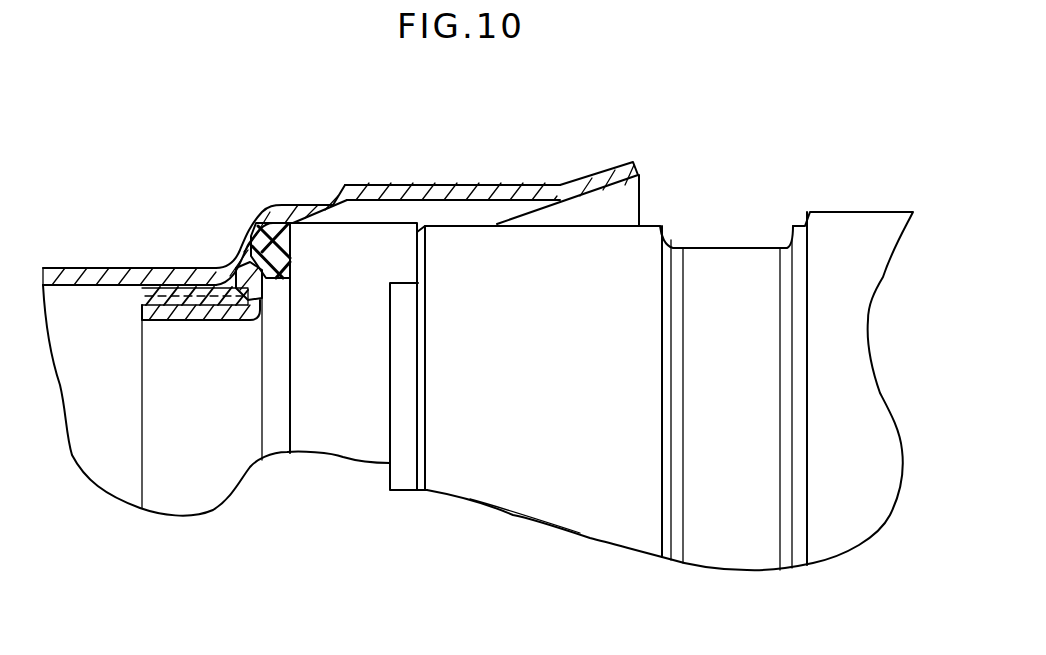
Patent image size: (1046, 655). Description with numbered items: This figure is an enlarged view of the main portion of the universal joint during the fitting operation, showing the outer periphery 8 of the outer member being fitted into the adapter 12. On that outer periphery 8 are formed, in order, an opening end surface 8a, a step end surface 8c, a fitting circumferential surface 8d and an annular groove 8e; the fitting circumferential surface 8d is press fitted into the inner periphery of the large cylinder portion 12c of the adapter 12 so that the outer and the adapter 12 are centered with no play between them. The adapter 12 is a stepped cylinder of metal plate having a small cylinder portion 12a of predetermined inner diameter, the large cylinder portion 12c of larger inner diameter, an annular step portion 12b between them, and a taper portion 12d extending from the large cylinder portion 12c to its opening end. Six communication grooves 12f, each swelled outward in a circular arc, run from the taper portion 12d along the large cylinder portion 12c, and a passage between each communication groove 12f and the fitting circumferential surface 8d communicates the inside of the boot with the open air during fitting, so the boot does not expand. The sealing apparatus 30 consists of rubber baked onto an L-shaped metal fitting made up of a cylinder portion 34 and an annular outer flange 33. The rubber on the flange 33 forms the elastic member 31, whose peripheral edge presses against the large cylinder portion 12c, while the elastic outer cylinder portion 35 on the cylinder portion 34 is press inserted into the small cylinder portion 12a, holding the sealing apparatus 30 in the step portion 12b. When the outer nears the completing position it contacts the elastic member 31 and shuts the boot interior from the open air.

The outer periphery of the outer 8 is at (602, 331).
The opening end surface 8a is at (387, 423).
The step end surface 8c is at (417, 260).
The fitting circumferential surface 8d is at (523, 495).
The annular groove 8e is at (747, 240).
The adapter 12 is at (346, 200).
The small cylinder portion 12a is at (110, 268).
The annular step portion 12b is at (237, 243).
The large cylinder portion 12c is at (277, 203).
The taper portion 12d is at (612, 168).
The communication groove 12f is at (445, 208).
The sealing apparatus 30 is at (295, 306).
The elastic member 31 is at (290, 257).
The annular outer flange 33 is at (263, 300).
The cylinder portion 34 is at (203, 315).
The elastic outer cylinder portion 35 is at (143, 300).